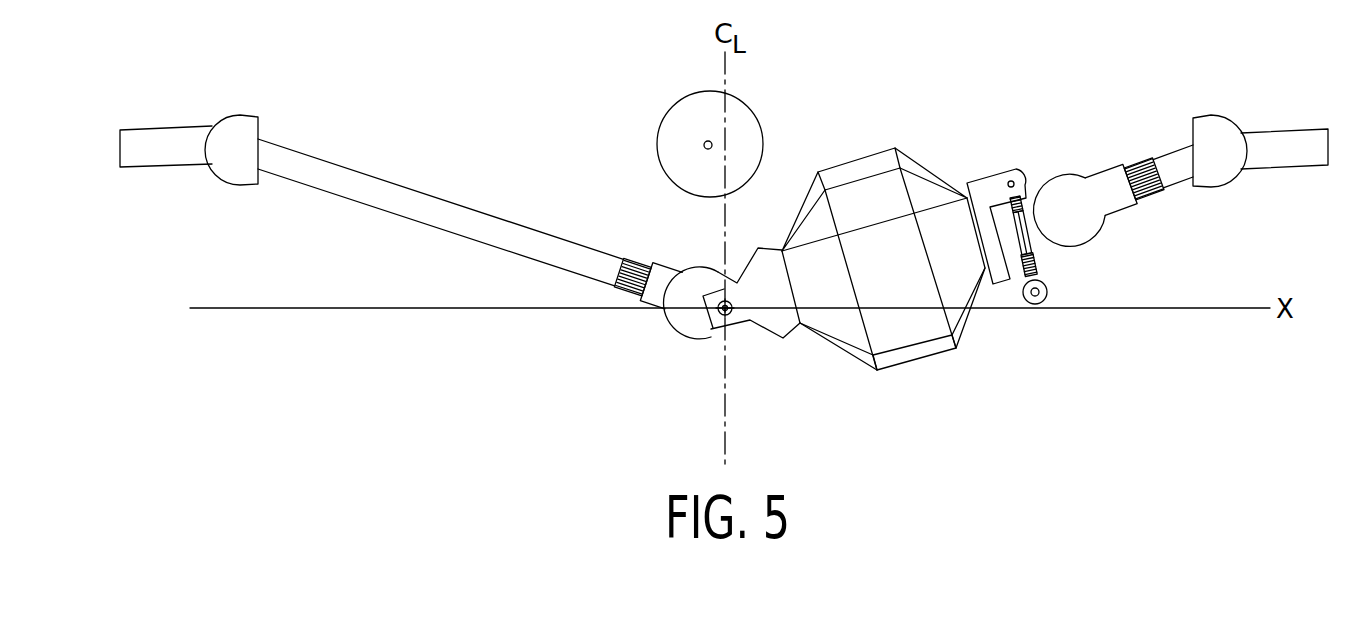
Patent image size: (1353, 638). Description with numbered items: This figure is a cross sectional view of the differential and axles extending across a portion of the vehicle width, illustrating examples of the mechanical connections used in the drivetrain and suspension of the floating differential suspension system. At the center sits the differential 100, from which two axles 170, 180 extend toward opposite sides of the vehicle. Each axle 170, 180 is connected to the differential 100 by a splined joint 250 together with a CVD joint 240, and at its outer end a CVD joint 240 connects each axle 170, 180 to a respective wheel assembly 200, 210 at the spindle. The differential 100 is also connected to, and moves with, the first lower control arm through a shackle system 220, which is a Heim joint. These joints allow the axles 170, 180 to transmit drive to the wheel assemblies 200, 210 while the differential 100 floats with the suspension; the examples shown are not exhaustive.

The differential 100 is at (848, 328).
The axle 170 is at (1073, 165).
The axle 180 is at (660, 257).
The wheel assembly 200 is at (1307, 142).
The wheel assembly 210 is at (162, 140).
The shackle system 220 is at (1040, 258).
The CVD joint 240 is at (234, 128).
The splined joint 250 is at (626, 289).